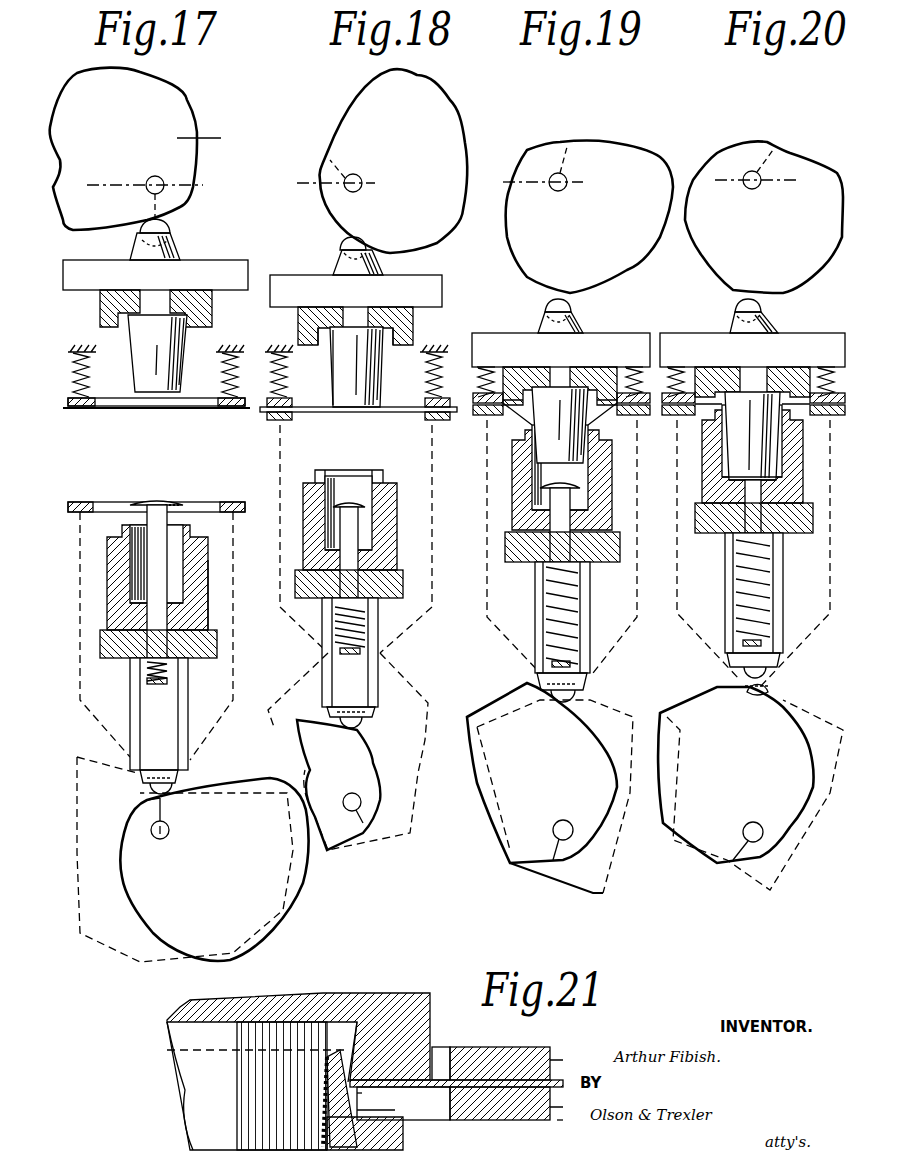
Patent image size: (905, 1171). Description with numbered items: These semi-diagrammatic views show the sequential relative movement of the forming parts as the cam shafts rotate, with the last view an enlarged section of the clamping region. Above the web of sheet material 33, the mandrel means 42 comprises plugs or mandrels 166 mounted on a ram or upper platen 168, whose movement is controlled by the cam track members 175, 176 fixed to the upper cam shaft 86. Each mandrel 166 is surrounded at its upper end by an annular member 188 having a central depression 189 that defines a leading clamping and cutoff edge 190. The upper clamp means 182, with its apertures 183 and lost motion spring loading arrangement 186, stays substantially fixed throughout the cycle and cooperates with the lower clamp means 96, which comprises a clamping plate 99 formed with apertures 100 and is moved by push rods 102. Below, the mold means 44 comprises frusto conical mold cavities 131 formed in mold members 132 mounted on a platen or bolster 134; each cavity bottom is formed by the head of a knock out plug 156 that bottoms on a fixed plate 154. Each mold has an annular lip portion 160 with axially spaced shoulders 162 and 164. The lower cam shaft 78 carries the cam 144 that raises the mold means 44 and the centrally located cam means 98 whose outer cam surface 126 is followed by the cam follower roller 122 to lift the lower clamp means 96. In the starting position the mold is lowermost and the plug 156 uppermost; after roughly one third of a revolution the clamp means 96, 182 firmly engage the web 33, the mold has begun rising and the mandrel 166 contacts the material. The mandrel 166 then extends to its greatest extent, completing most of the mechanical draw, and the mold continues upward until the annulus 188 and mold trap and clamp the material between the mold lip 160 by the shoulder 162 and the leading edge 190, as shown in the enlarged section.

In FIG. 17, the cam track member 175 is at (183, 105).
In FIG. 19, the cam track member 175 is at (625, 152).
In FIG. 17, the cam track member 176 is at (215, 138).
In FIG. 17, the upper cam shaft 86 is at (150, 178).
In FIG. 18, the upper cam shaft 86 is at (362, 178).
In FIG. 20, the upper cam shaft 86 is at (762, 176).
In FIG. 17, the mandrel means 42 is at (250, 256).
In FIG. 19, the mandrel means 42 is at (680, 305).
In FIG. 17, the ram or upper platen 168 is at (192, 257).
In FIG. 18, the ram or upper platen 168 is at (423, 280).
In FIG. 17, the annular member 188 is at (100, 308).
In FIG. 18, the annular member 188 is at (413, 317).
In FIG. 21, the annular member 188 is at (317, 993).
In FIG. 17, the plug or mandrel 166 is at (175, 345).
In FIG. 18, the plug or mandrel 166 is at (368, 382).
In FIG. 19, the plug or mandrel 166 is at (545, 425).
In FIG. 17, the lost motion spring loading arrangement 186 is at (88, 376).
In FIG. 18, the lost motion spring loading arrangement 186 is at (428, 377).
In FIG. 17, the upper clamp means 182 is at (83, 408).
In FIG. 21, the upper clamp means 182 is at (565, 1056).
In FIG. 17, the web of sheet material 33 is at (158, 412).
In FIG. 17, the aperture 183 is at (188, 402).
In FIG. 21, the aperture 183 is at (442, 1058).
In FIG. 17, the lower clamp means 96 is at (63, 488).
In FIG. 18, the lower clamp means 96 is at (300, 424).
In FIG. 19, the lower clamp means 96 is at (637, 418).
In FIG. 20, the lower clamp means 96 is at (675, 420).
In FIG. 21, the lower clamp means 96 is at (562, 1126).
In FIG. 17, the clamping plate 99 is at (88, 502).
In FIG. 17, the aperture 100 is at (204, 502).
In FIG. 21, the aperture 100 is at (440, 1117).
In FIG. 17, the mold cavity 131 is at (183, 546).
In FIG. 18, the mold cavity 131 is at (350, 523).
In FIG. 19, the mold cavity 131 is at (578, 485).
In FIG. 17, the mold member 132 is at (210, 563).
In FIG. 21, the mold member 132 is at (407, 1140).
In FIG. 17, the push rod 102 is at (243, 623).
In FIG. 18, the push rod 102 is at (356, 539).
In FIG. 19, the push rod 102 is at (612, 645).
In FIG. 17, the platen or bolster 134 is at (207, 660).
In FIG. 17, the fixed plate 154 is at (160, 672).
In FIG. 17, the cam means 98 is at (123, 805).
In FIG. 17, the lower cam shaft 78 is at (170, 831).
In FIG. 19, the lower cam shaft 78 is at (555, 823).
In FIG. 17, the cam 144 is at (285, 913).
In FIG. 19, the cam 144 is at (564, 777).
In FIG. 17, the cam surface 126 is at (140, 962).
In FIG. 18, the cam surface 126 is at (395, 687).
In FIG. 17, the knock out plug 156 is at (170, 523).
In FIG. 18, the knock out plug 156 is at (352, 530).
In FIG. 18, the lip portion 160 is at (380, 473).
In FIG. 21, the lip portion 160 is at (360, 1077).
In FIG. 18, the leading clamping and cutoff edge 190 is at (393, 347).
In FIG. 21, the leading clamping and cutoff edge 190 is at (350, 1083).
In FIG. 18, the central depression 189 is at (328, 363).
In FIG. 21, the central depression 189 is at (353, 1067).
In FIG. 18, the cam follower roller 122 is at (350, 673).
In FIG. 20, the cam follower roller 122 is at (747, 690).
In FIG. 19, the mold means 44 is at (673, 540).
In FIG. 20, the mold means 44 is at (687, 520).
In FIG. 21, the shoulder 162 is at (362, 1093).
In FIG. 21, the shoulder 164 is at (391, 1111).